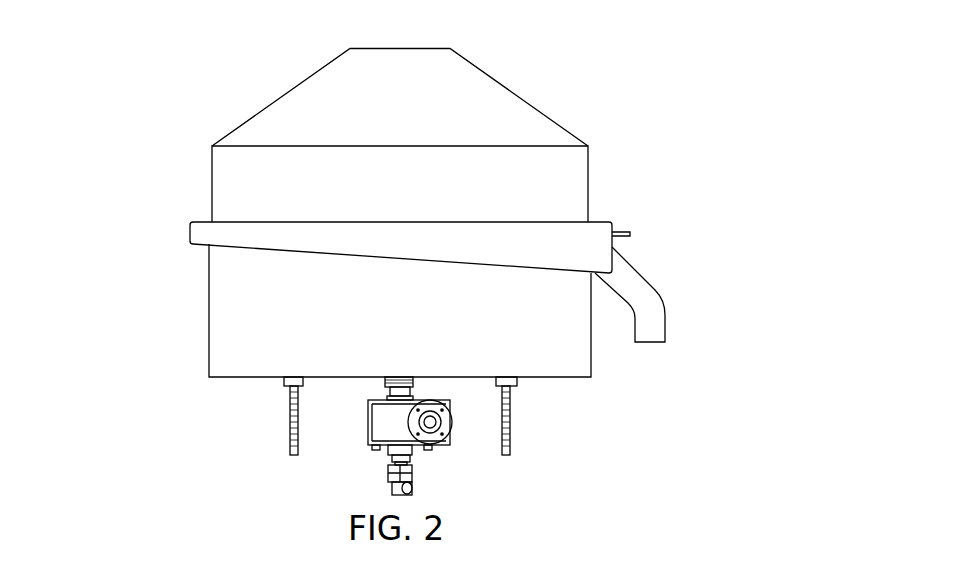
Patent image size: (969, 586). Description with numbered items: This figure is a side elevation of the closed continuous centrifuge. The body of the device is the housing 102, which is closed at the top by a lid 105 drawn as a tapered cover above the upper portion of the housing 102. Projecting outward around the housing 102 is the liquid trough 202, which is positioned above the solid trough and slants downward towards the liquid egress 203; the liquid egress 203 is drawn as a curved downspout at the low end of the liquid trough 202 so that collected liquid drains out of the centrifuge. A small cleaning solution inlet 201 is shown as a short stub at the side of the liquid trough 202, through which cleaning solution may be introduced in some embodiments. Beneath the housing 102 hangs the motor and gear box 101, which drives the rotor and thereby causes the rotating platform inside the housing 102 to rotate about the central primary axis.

The motor and gear box 101 is at (354, 453).
The housing 102 is at (190, 172).
The lid 105 is at (511, 63).
The cleaning solution inlet 201 is at (637, 208).
The liquid trough 202 is at (166, 242).
The liquid egress 203 is at (685, 305).